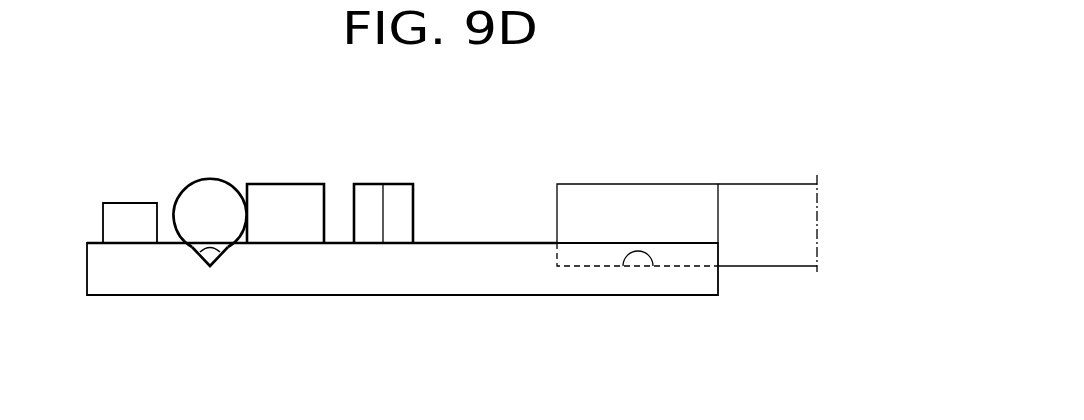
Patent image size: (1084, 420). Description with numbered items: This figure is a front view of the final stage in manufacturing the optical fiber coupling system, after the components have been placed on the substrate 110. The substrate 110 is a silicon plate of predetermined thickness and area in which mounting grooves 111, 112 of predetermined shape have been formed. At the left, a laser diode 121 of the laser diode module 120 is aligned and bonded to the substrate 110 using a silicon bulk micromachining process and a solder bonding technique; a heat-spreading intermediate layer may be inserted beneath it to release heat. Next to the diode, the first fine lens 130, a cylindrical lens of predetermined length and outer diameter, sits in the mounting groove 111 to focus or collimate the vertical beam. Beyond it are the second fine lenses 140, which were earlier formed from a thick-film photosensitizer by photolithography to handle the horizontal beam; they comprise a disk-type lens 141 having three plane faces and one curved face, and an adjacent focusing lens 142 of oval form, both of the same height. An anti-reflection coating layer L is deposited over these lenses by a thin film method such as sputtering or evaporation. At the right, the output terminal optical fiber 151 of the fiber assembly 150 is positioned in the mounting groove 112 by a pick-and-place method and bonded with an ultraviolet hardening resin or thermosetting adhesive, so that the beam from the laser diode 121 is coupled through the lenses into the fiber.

The substrate 110 is at (731, 324).
The mounting groove 111 is at (225, 255).
The mounting groove 112 is at (622, 268).
The laser diode module 120 is at (109, 178).
The laser diode 121 is at (127, 212).
The first fine lens 130 is at (212, 194).
The second fine lenses 140 is at (330, 164).
The disk-type lens 141 is at (288, 194).
The focusing lens 142 is at (383, 184).
The output terminal optical fiber assembly 150 is at (687, 183).
The output terminal optical fiber 151 is at (608, 192).
The anti-reflection coating layer L is at (413, 215).